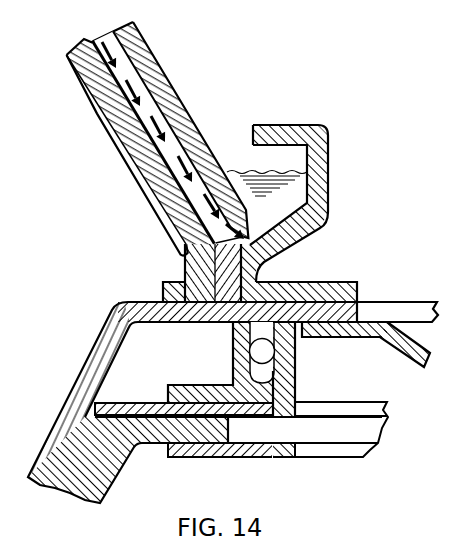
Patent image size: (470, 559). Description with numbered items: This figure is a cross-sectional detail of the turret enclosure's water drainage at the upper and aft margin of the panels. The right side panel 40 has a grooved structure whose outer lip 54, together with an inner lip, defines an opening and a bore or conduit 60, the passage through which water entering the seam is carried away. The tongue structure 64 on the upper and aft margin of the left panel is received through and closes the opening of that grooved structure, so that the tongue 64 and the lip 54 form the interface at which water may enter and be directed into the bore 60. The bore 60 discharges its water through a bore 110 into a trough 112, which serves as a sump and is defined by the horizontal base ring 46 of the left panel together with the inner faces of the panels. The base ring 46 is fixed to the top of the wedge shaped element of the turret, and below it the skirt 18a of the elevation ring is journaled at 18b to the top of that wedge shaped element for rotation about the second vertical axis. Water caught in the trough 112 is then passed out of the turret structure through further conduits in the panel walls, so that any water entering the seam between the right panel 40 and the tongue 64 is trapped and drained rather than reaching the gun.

The right side panel 40 is at (149, 53).
The bore or conduit 60 is at (176, 97).
The outer lip 54 is at (104, 126).
The tongue structure 64 is at (167, 182).
The trough 112 is at (253, 214).
The horizontal base ring 46 is at (329, 162).
The bore 110 is at (267, 252).
The skirt 18a is at (82, 386).
The journal 18b is at (290, 362).